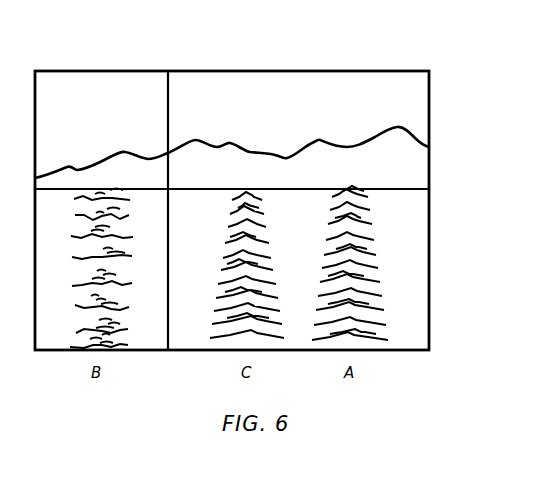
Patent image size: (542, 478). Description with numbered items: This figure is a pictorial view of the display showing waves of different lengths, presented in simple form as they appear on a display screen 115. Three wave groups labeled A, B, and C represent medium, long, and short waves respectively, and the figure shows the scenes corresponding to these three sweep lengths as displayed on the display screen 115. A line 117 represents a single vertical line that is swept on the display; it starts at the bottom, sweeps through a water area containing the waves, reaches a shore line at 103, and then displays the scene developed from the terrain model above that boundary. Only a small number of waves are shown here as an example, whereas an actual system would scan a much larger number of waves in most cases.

The shore line 103 is at (407, 189).
The display screen 115 is at (353, 71).
The vertical line 117 is at (168, 97).